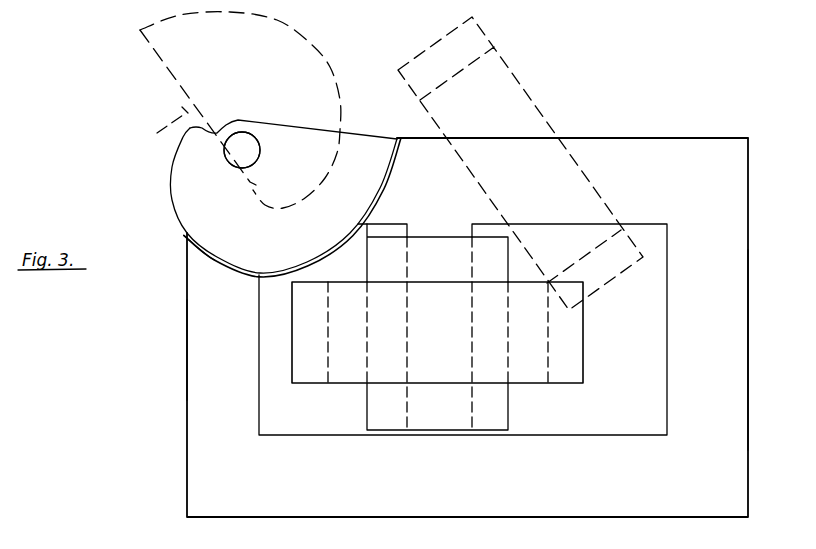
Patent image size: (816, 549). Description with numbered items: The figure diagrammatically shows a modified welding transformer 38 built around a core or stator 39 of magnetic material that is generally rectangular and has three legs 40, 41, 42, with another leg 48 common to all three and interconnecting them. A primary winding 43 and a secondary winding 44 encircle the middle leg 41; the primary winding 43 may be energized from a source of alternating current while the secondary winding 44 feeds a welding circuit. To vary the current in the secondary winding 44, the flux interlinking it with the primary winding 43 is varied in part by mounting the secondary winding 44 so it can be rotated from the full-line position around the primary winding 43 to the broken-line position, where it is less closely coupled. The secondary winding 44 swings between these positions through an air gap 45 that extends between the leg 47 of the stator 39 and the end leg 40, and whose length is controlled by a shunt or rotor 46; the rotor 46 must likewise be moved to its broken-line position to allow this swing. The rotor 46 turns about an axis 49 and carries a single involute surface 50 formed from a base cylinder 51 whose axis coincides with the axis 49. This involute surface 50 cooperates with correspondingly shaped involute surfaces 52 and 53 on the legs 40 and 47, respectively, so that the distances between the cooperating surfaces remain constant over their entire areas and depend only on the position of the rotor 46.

The transformer 38 is at (166, 352).
The core or stator 39 is at (661, 128).
The end leg 40 is at (197, 414).
The middle leg 41 is at (410, 238).
The leg 42 is at (750, 347).
The primary winding 43 is at (530, 410).
The secondary winding 44 is at (595, 367).
The air gap 45 is at (400, 137).
The shunt or rotor 46 is at (188, 170).
The leg 47 is at (420, 178).
The common leg 48 is at (415, 530).
The axis of rotation 49 is at (243, 148).
The involute surface 50 is at (320, 55).
The base cylinder 51 is at (261, 152).
The involute surface 52 is at (232, 258).
The involute surface 53 is at (384, 184).